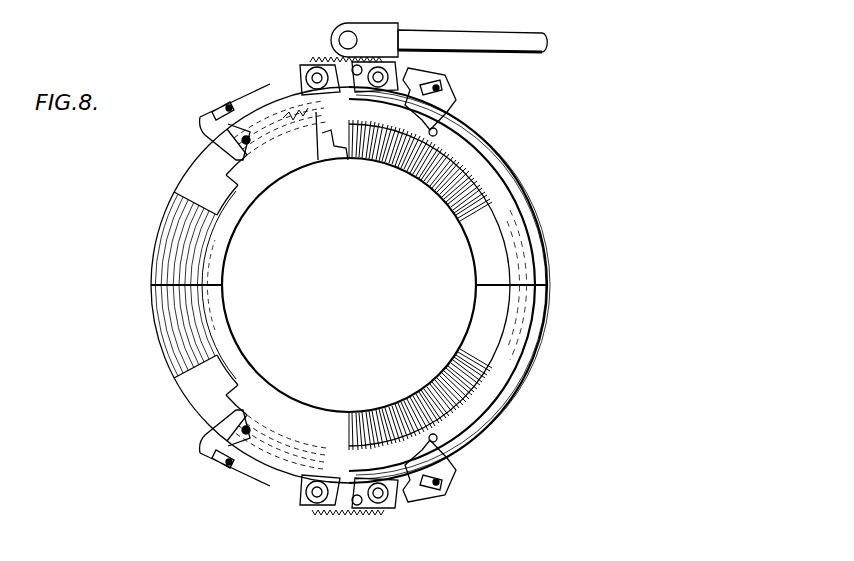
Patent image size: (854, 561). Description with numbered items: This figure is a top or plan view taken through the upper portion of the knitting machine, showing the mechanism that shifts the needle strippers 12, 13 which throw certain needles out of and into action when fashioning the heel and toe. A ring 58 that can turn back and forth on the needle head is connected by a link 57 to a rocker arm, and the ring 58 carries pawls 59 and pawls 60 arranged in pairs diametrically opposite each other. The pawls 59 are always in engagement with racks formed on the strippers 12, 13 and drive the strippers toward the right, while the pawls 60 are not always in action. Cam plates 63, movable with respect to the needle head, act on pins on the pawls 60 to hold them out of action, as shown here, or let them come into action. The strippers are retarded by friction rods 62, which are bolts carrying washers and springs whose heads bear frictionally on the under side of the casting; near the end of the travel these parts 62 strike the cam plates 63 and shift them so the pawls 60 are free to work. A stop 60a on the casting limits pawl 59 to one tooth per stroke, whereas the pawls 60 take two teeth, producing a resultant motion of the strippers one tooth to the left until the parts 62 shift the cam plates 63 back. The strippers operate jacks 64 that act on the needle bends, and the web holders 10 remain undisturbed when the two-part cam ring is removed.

The web holders 10 is at (393, 393).
The needle stripper 12 is at (255, 447).
The needle stripper 13 is at (283, 118).
The link 57 is at (483, 40).
The ring 58 is at (152, 263).
The pawl 59 is at (311, 72).
The pawl 60 is at (368, 62).
The stop 60a is at (317, 135).
The friction rod 62 is at (248, 143).
The cam plate 63 is at (455, 92).
The jack 64 is at (481, 185).